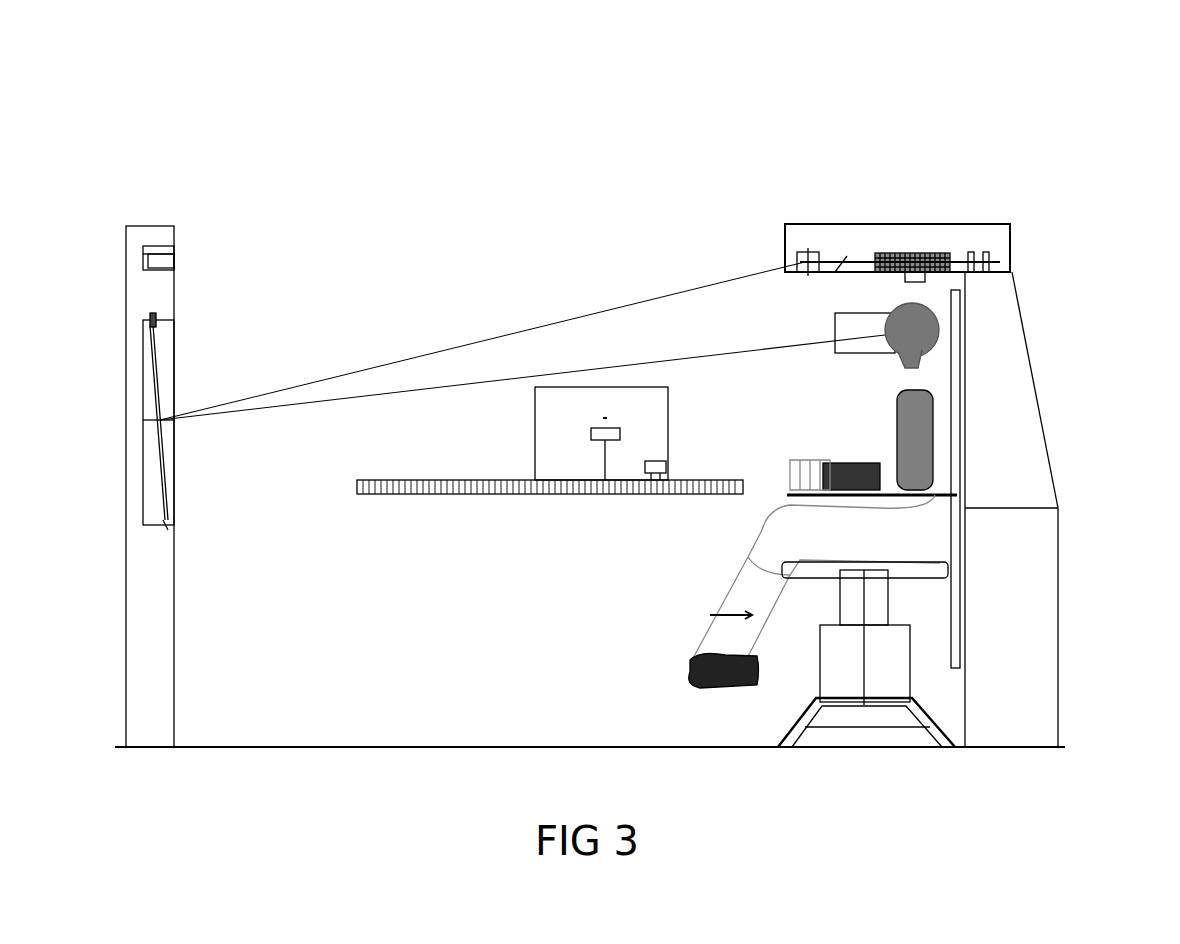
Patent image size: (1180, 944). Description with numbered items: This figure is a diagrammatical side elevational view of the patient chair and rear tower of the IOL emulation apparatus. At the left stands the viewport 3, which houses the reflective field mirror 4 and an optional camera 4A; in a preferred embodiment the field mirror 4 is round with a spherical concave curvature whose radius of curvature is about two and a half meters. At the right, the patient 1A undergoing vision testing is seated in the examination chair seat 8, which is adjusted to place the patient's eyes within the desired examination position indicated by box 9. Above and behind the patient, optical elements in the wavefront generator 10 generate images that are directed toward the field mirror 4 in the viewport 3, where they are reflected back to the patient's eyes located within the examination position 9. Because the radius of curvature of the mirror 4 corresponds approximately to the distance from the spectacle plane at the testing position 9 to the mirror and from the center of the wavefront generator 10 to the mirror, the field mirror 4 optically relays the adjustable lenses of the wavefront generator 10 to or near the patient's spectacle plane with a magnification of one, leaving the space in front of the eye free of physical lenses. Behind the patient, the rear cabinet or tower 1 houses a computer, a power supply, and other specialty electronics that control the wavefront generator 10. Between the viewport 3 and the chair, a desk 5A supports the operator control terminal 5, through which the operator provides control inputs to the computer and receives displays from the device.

The tower 1 is at (985, 390).
The patient 1A is at (855, 412).
The viewport 3 is at (136, 464).
The field mirror 4 is at (128, 373).
The camera 4A is at (150, 256).
The operator control terminal 5 is at (589, 433).
The desk 5A is at (550, 461).
The examination chair seat 8 is at (905, 567).
The desired examination position 9 is at (828, 313).
The wavefront generator 10 is at (835, 234).